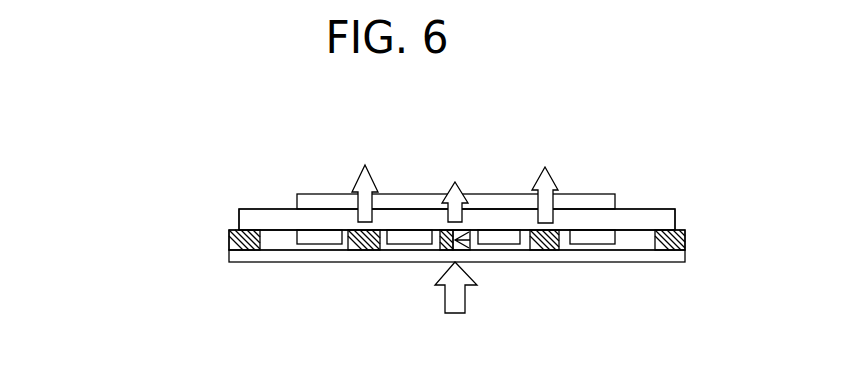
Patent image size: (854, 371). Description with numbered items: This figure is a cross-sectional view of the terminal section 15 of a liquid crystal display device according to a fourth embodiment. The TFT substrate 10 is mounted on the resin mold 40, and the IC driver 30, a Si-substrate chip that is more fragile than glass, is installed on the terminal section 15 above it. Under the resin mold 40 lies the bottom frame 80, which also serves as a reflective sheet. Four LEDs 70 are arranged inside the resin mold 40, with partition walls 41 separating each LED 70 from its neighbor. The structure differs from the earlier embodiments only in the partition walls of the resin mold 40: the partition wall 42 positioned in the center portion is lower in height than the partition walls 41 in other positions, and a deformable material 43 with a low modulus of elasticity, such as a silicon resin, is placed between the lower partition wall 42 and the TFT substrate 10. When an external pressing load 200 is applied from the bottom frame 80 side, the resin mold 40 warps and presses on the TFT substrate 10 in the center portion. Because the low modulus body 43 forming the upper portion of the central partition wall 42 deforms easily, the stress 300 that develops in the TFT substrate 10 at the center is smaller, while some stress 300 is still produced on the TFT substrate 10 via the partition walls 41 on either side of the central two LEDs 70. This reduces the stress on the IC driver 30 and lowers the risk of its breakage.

The TFT substrate 10 is at (250, 220).
The terminal section 15 is at (457, 219).
The IC driver 30 is at (310, 201).
The resin mold 40 is at (421, 267).
The partition wall 41 is at (363, 243).
The partition wall 42 is at (444, 230).
The deformable material 43 is at (462, 230).
The LED 70 is at (313, 245).
The bottom frame 80 is at (240, 255).
The pressing load 200 is at (465, 300).
The stress 300 is at (356, 184).